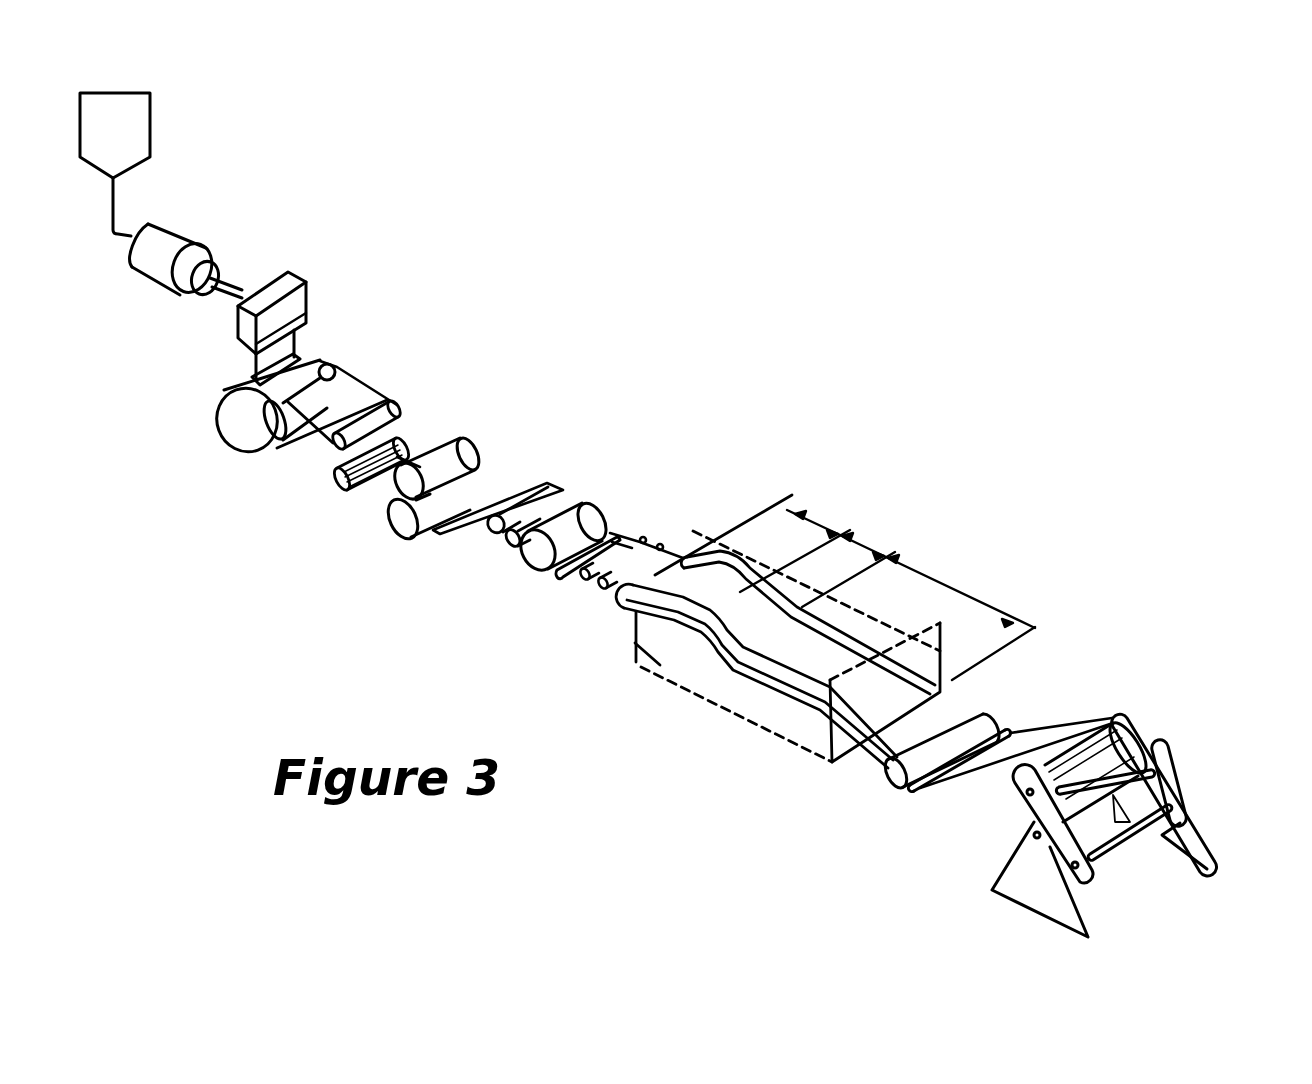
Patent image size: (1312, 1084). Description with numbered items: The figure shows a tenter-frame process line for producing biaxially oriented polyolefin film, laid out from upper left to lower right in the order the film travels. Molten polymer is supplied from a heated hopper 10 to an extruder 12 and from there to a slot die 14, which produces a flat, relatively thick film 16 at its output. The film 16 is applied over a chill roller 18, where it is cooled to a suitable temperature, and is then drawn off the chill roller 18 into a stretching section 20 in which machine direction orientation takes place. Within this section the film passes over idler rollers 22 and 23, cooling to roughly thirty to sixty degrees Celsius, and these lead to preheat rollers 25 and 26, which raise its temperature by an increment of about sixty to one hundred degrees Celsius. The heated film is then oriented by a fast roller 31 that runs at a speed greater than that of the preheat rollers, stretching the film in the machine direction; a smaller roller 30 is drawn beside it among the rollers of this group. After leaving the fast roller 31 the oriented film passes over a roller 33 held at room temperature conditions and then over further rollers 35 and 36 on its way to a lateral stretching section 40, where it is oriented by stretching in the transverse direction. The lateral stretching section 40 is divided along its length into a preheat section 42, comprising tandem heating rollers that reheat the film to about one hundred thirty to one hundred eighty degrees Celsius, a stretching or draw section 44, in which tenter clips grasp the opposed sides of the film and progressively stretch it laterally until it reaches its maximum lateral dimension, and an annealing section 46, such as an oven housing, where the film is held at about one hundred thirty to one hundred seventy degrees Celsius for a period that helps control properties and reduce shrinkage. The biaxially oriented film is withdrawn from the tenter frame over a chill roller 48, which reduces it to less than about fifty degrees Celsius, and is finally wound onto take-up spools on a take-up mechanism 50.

The heated hopper 10 is at (150, 120).
The extruder 12 is at (183, 233).
The slot die 14 is at (306, 300).
The film 16 is at (300, 334).
The chill roller 18 is at (245, 428).
The stretching section 20 is at (598, 490).
The idler roller 22 is at (328, 445).
The idler roller 23 is at (337, 473).
The preheat roller 25 is at (407, 488).
The preheat roller 26 is at (400, 525).
The guide roller 30 is at (493, 530).
The fast roller 31 is at (500, 545).
The roller 33 is at (603, 507).
The nip roller 35 is at (583, 580).
The nip roller 36 is at (600, 588).
The lateral stretching section 40 is at (1110, 581).
The preheat section 42 is at (790, 517).
The stretching or draw section 44 is at (873, 548).
The annealing section 46 is at (977, 602).
The chill roller 48 is at (997, 716).
The take-up mechanism 50 is at (1184, 758).